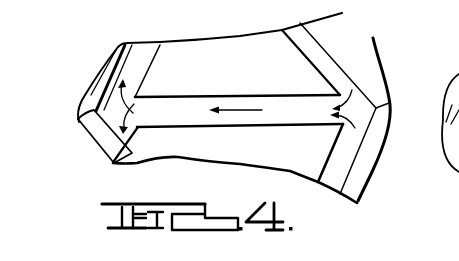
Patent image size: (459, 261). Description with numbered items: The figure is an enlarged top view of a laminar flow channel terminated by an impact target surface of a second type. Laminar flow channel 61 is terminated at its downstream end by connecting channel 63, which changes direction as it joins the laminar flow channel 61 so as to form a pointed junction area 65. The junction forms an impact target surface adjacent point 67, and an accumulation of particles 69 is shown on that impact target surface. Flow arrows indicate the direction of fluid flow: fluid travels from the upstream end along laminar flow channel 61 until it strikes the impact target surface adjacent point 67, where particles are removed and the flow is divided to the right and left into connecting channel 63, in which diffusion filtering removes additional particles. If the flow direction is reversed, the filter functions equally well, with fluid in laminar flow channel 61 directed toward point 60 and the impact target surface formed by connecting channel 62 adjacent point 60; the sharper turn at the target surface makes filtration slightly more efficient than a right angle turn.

The point 60 is at (395, 100).
The laminar flow channel 61 is at (272, 83).
The connecting channel 62 is at (324, 48).
The connecting channel 63 is at (117, 50).
The pointed junction area 65 is at (78, 120).
The point 67 is at (101, 102).
The accumulation of particles 69 is at (102, 123).